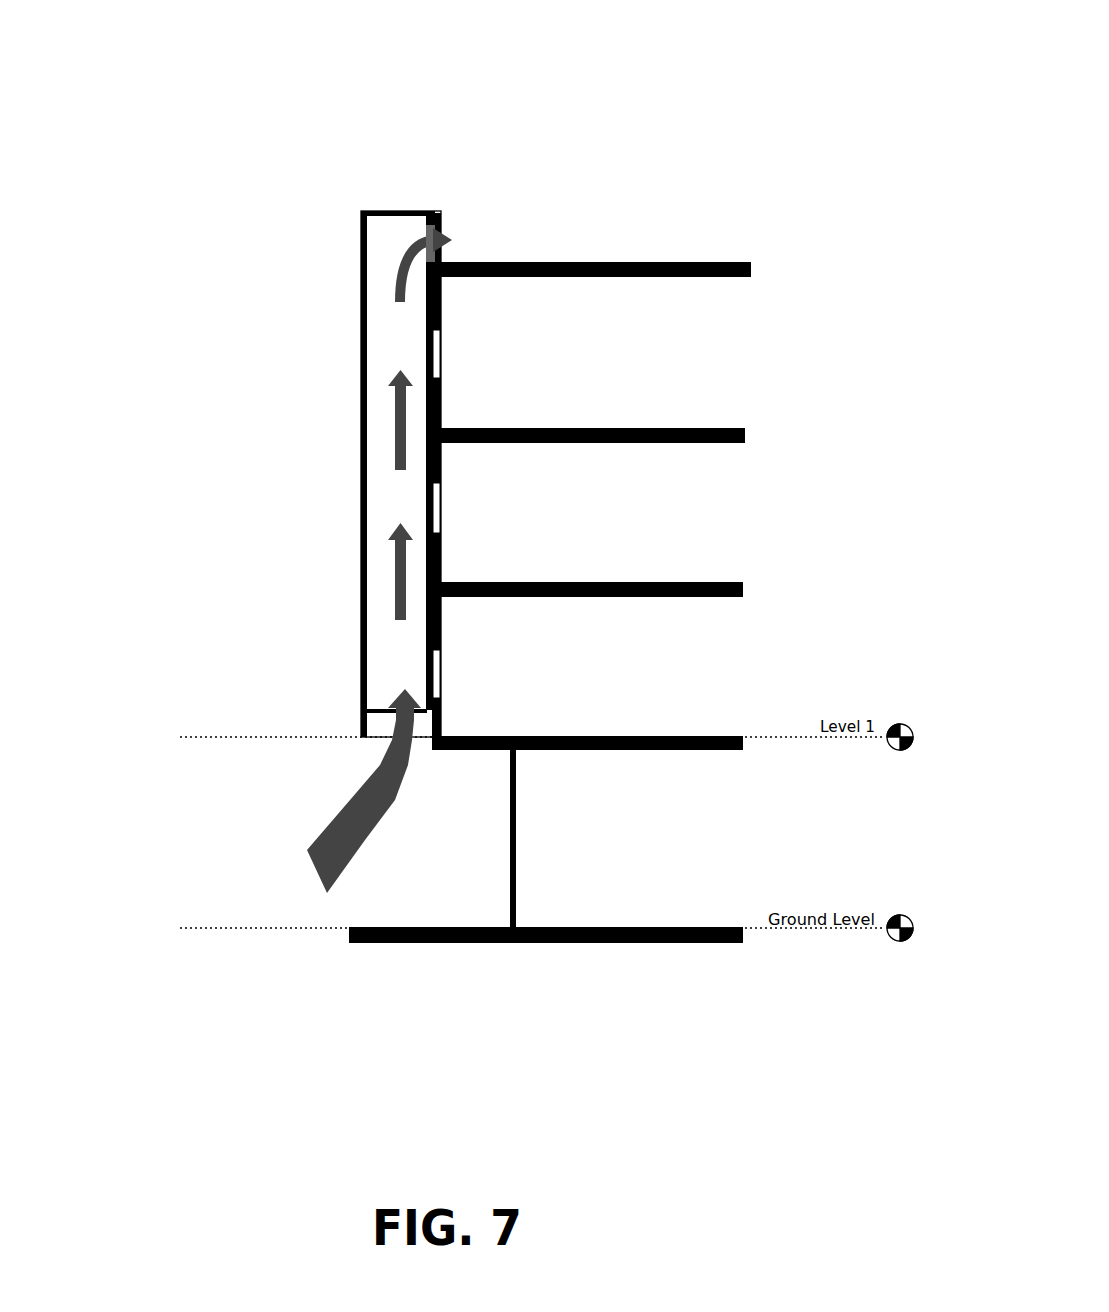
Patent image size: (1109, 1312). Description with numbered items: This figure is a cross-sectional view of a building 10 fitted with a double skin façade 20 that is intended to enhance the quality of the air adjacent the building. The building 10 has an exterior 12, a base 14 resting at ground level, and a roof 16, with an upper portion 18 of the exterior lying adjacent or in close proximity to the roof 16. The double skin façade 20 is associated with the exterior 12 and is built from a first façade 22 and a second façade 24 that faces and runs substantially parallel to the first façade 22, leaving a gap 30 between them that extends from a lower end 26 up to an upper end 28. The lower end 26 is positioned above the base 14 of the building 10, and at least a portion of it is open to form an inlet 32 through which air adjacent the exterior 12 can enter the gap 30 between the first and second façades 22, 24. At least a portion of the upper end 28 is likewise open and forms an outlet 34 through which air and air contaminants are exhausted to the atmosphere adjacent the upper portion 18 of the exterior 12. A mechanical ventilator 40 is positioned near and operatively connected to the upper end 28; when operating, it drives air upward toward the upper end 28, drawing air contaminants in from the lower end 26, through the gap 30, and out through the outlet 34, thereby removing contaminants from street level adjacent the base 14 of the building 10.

The building 10 is at (648, 84).
The exterior 12 is at (428, 730).
The base 14 is at (348, 943).
The roof 16 is at (624, 262).
The upper portion 18 is at (445, 318).
The double skin façade 20 is at (352, 251).
The first façade 22 is at (428, 636).
The second façade 24 is at (360, 330).
The lower end 26 is at (360, 735).
The upper end 28 is at (366, 213).
The gap 30 is at (385, 485).
The inlet 32 is at (363, 704).
The outlet 34 is at (437, 220).
The mechanical ventilator 40 is at (445, 233).